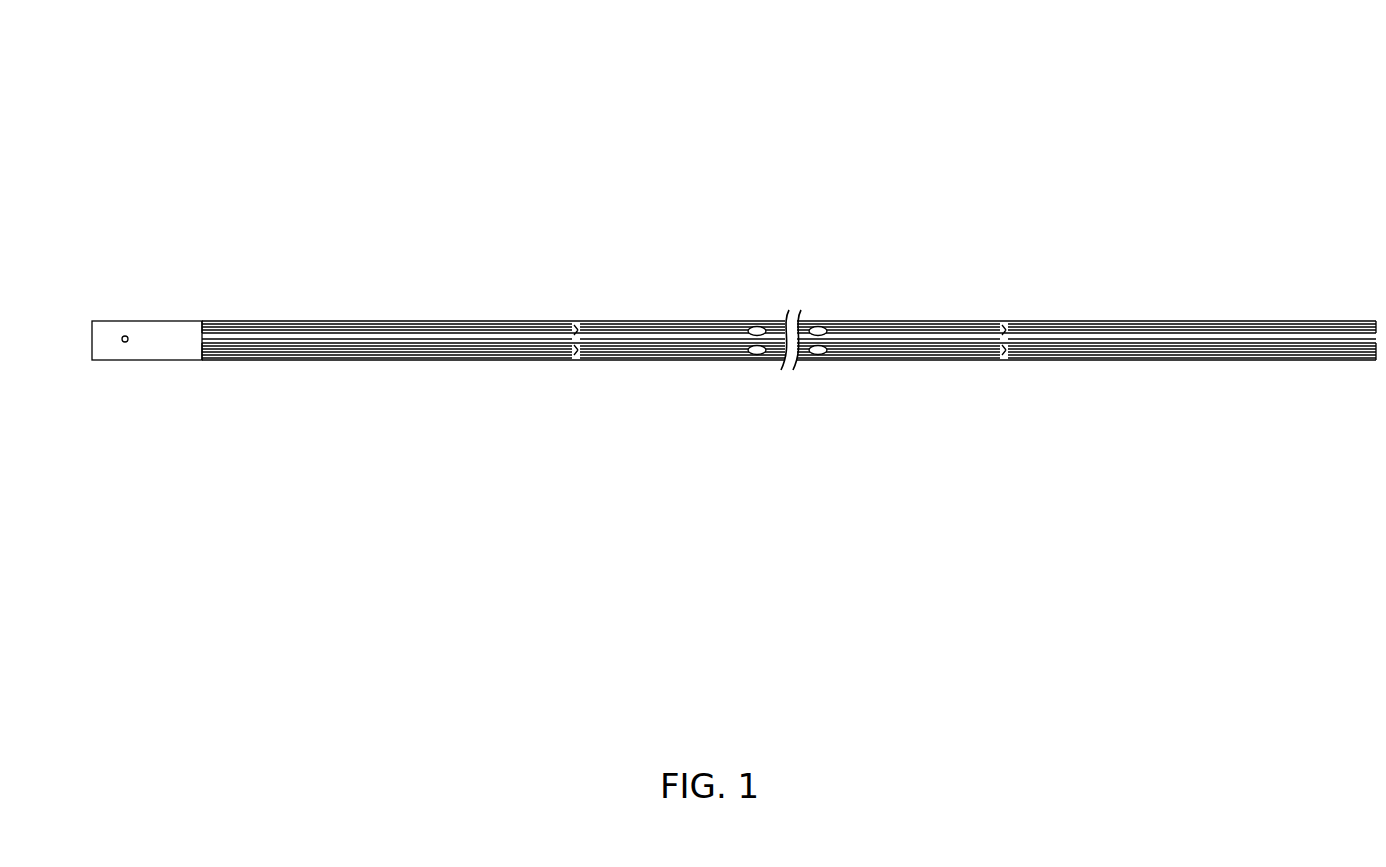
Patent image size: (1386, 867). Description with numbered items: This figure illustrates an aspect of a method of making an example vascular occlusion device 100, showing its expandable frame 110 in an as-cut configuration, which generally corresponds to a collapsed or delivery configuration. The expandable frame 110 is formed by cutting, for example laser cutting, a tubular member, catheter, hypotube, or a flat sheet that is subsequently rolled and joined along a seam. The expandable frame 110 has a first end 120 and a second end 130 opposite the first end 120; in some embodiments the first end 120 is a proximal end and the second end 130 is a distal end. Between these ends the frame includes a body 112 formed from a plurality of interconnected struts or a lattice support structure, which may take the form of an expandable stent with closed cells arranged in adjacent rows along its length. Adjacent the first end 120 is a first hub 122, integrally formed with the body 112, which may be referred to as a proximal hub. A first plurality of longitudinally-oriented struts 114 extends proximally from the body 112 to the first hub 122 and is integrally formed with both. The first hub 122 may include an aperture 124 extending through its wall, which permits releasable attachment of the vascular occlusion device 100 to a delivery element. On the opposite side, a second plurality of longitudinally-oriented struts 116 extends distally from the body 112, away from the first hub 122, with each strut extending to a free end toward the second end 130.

The vascular occlusion device 100 is at (995, 112).
The expandable frame 110 is at (937, 285).
The body 112 is at (660, 373).
The first plurality of longitudinally-oriented struts 114 is at (388, 360).
The second plurality of longitudinally-oriented struts 116 is at (1195, 360).
The first end 120 is at (130, 285).
The first hub 122 is at (148, 360).
The aperture 124 is at (125, 336).
The second end 130 is at (1357, 372).